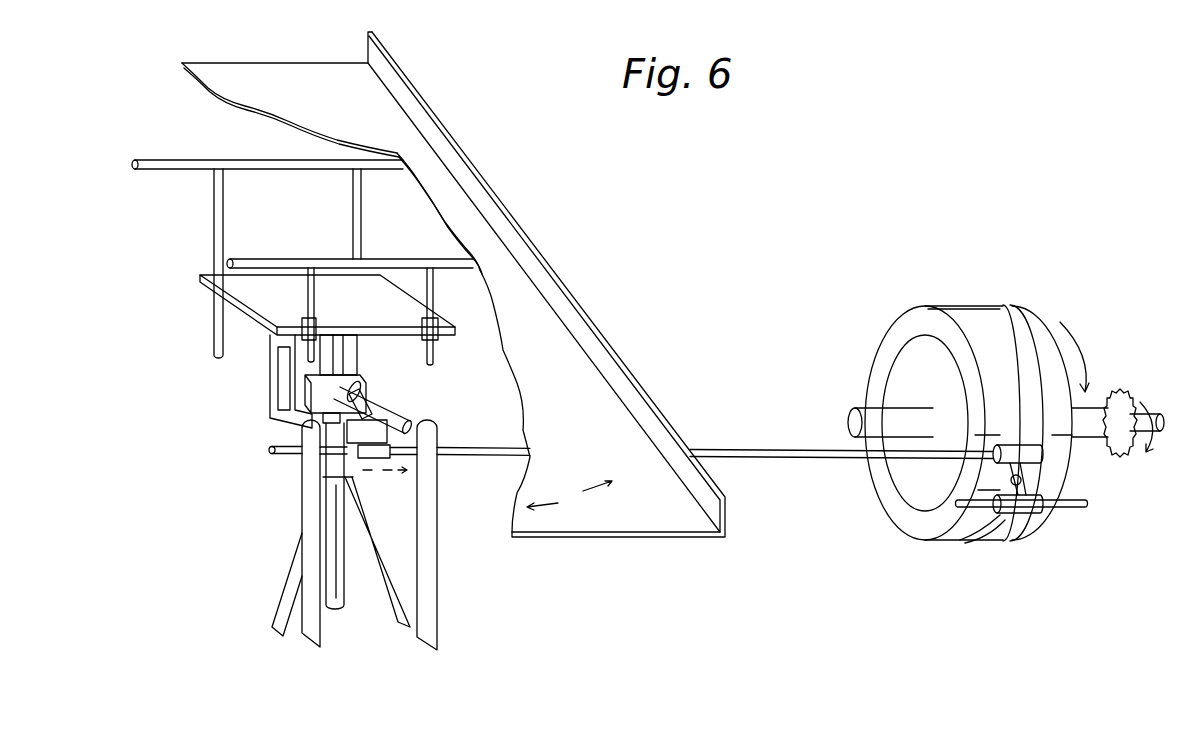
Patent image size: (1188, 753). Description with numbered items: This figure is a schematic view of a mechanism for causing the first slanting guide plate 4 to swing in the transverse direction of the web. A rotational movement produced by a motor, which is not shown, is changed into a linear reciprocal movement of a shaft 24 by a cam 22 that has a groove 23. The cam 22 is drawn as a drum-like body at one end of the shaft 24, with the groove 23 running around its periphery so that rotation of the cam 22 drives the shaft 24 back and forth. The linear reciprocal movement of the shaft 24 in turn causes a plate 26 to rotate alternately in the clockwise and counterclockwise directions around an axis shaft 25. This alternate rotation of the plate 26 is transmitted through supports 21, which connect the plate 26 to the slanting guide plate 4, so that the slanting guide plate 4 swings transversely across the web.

The first slanting guide plate 4 is at (656, 527).
The supports 21 is at (213, 213).
The cam 22 is at (968, 311).
The groove 23 is at (1012, 310).
The shaft 24 is at (481, 452).
The axis shaft 25 is at (322, 460).
The plate 26 is at (258, 318).